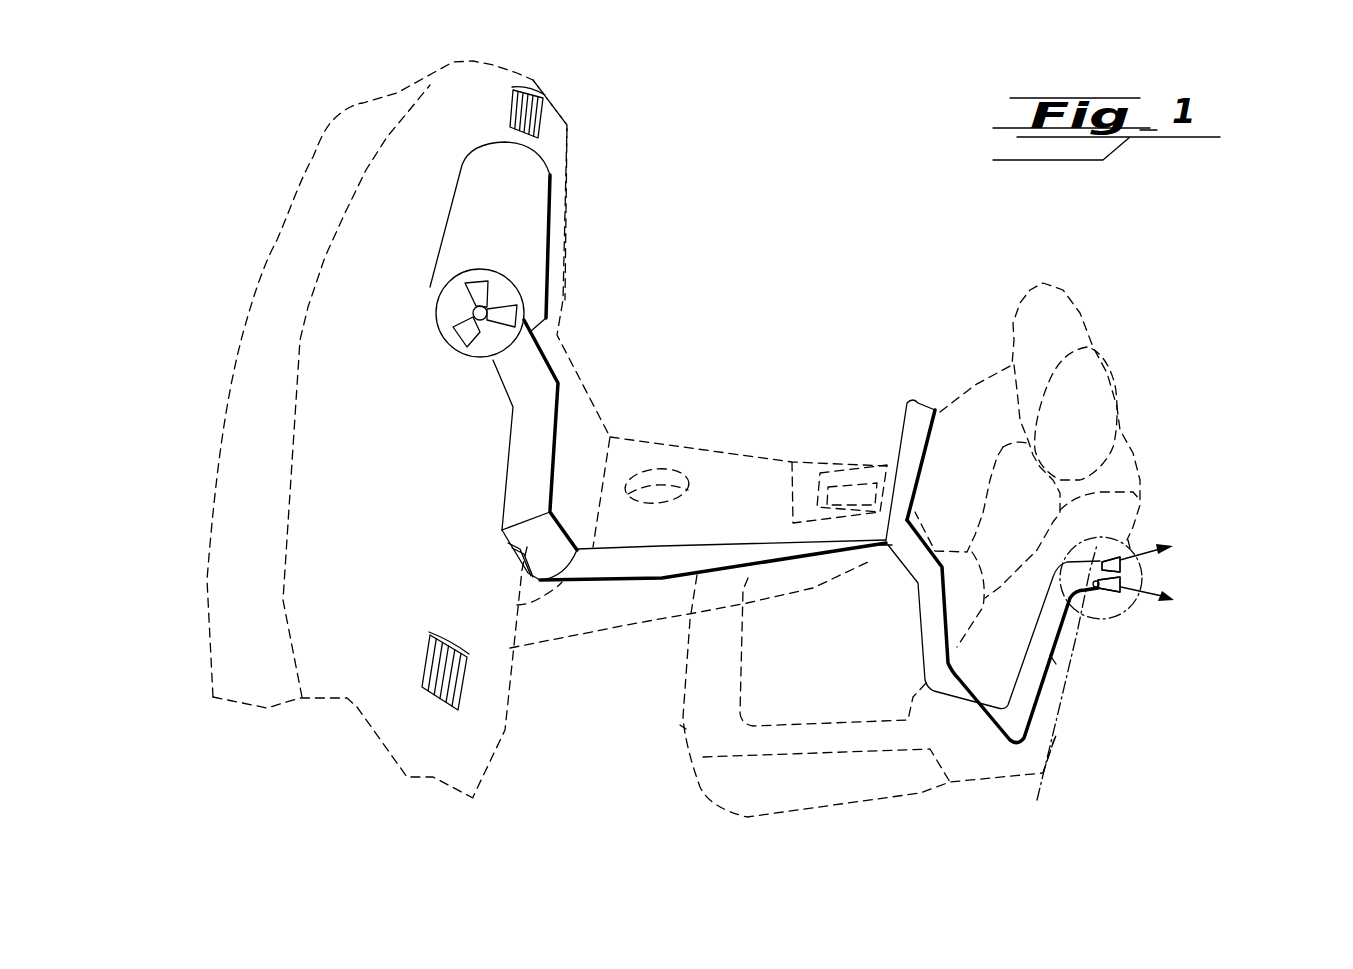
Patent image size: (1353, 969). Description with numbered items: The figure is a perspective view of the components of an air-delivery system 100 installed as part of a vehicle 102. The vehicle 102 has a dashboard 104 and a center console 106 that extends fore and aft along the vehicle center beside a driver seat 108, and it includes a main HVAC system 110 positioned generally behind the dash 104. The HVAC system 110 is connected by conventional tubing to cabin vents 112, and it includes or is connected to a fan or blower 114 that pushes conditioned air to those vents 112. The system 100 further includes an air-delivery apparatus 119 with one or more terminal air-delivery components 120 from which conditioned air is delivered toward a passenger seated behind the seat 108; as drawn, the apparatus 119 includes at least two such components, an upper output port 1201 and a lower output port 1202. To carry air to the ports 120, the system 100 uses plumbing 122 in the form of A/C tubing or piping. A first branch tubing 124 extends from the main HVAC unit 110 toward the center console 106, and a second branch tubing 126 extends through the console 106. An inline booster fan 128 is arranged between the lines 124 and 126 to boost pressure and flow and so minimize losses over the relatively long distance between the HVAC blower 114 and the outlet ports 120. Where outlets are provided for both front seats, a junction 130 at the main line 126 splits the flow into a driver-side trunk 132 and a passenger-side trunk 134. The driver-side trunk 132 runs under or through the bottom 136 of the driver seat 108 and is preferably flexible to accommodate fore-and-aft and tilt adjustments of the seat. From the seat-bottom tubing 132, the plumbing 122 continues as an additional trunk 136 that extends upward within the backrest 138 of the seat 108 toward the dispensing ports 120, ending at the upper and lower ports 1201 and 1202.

The air-delivery system 100 is at (1262, 497).
The vehicle 102 is at (245, 203).
The dashboard 104 is at (568, 163).
The center console 106 is at (718, 452).
The driver seat 108 is at (680, 805).
The main HVAC system 110 is at (548, 237).
The vents 112 is at (532, 88).
The fan or blower 114 is at (463, 356).
The air-delivery apparatus 119 is at (1128, 618).
The terminal air-delivery component 120 is at (1199, 567).
The upper output port 1201 is at (1132, 612).
The lower output port 1202 is at (1107, 535).
The plumbing 122 is at (934, 330).
The first branch tubing 124 is at (507, 429).
The second branch tubing 126 is at (663, 580).
The inline booster fan 128 is at (517, 558).
The junction 130 is at (882, 562).
The driver-side trunk 132 is at (925, 652).
The passenger-side trunk 134 is at (900, 449).
The seat bottom / additional trunk 136 is at (682, 727).
The backrest 138 is at (1057, 733).